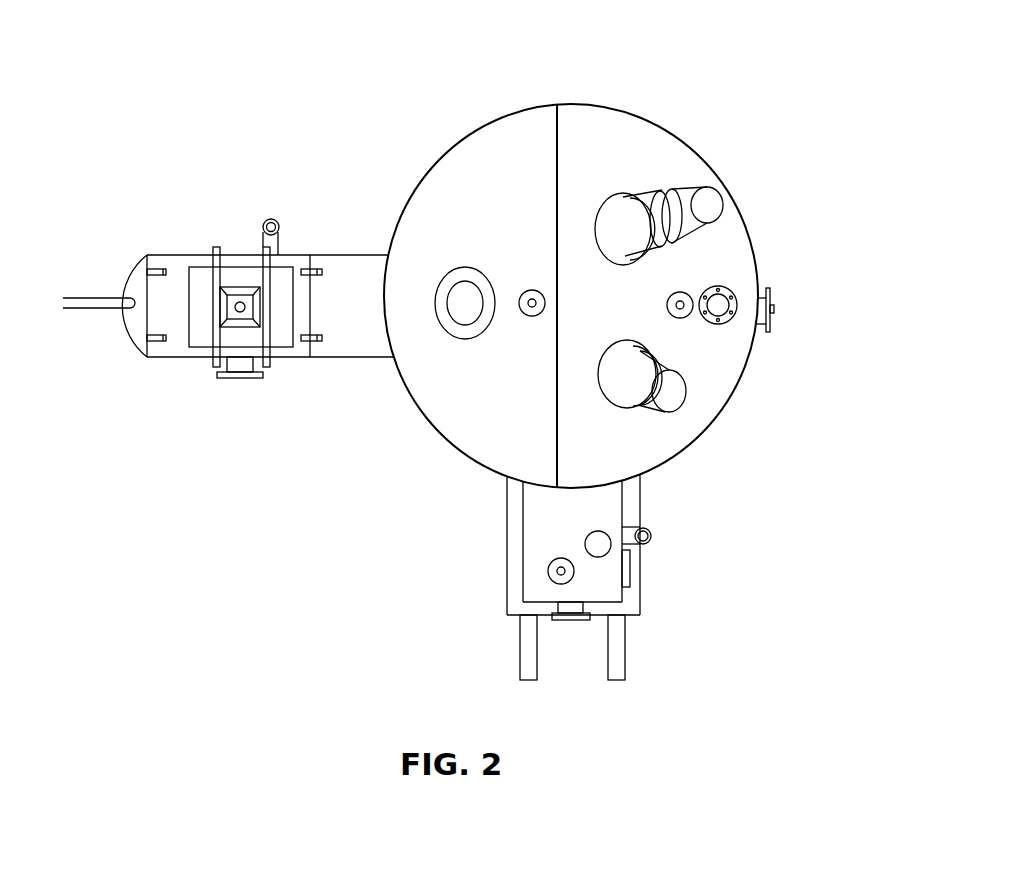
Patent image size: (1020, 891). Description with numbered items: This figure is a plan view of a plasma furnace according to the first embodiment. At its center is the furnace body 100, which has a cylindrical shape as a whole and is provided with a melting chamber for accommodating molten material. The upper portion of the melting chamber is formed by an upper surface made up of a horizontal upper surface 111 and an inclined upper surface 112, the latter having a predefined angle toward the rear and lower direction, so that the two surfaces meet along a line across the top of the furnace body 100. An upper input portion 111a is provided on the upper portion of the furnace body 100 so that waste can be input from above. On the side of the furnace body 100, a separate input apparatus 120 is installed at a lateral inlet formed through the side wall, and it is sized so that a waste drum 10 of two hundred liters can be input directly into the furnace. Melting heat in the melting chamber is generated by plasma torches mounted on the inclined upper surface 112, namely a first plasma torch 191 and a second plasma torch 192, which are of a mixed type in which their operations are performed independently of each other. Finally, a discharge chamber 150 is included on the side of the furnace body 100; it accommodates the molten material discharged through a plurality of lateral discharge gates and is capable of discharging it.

The waste drum 10 is at (177, 255).
The furnace body 100 is at (764, 384).
The horizontal upper surface 111 is at (465, 152).
The upper input portion 111a is at (452, 270).
The inclined upper surface 112 is at (607, 122).
The input apparatus 120 is at (332, 348).
The discharge chamber 150 is at (607, 583).
The first plasma torch 191 is at (668, 392).
The second plasma torch 192 is at (698, 203).